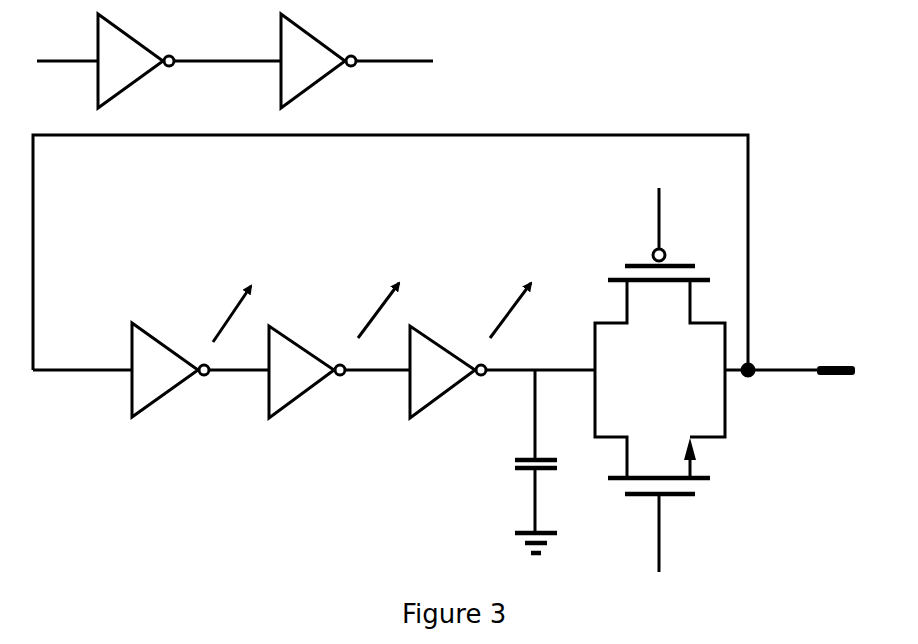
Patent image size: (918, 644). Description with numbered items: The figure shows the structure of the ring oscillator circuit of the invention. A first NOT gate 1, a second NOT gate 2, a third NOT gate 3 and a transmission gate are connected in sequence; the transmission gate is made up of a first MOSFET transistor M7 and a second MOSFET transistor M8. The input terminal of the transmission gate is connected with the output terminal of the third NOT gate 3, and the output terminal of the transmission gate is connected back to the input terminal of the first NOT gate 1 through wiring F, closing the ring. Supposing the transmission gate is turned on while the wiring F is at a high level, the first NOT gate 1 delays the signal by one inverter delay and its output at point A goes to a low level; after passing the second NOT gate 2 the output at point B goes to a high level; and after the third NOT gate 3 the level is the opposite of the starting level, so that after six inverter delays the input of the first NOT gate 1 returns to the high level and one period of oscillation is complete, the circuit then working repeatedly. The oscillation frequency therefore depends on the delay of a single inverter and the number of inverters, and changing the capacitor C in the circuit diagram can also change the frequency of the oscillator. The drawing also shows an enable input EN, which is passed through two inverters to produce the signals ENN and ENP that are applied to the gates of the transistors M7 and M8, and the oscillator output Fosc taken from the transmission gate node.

The first NOT gate 1 is at (170, 370).
The second NOT gate 2 is at (307, 372).
The third NOT gate 3 is at (448, 372).
The point A is at (240, 309).
The point B is at (390, 309).
The capacitor C is at (513, 403).
The wiring F is at (390, 252).
The first MOS transistor switch M7 is at (652, 279).
The second MOS transistor switch M8 is at (655, 471).
The enable input EN is at (63, 45).
The inverted enable signal ENN is at (189, 61).
The double-inverted enable signal ENP is at (357, 61).
The oscillator output Fosc is at (790, 350).